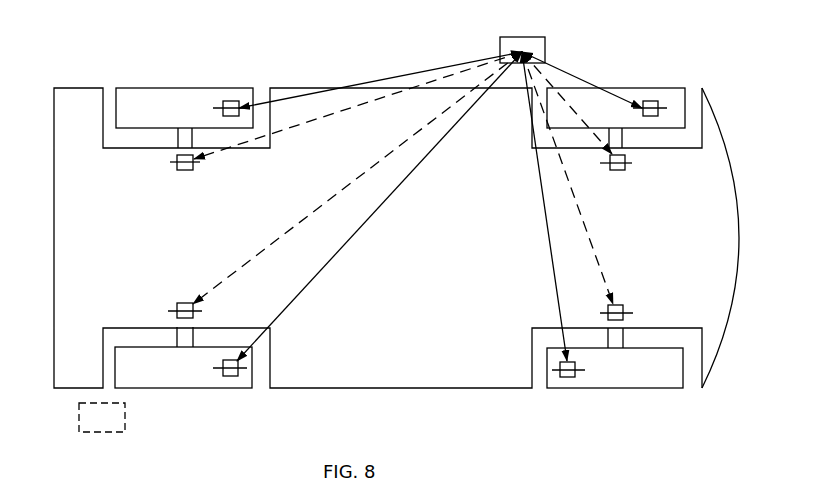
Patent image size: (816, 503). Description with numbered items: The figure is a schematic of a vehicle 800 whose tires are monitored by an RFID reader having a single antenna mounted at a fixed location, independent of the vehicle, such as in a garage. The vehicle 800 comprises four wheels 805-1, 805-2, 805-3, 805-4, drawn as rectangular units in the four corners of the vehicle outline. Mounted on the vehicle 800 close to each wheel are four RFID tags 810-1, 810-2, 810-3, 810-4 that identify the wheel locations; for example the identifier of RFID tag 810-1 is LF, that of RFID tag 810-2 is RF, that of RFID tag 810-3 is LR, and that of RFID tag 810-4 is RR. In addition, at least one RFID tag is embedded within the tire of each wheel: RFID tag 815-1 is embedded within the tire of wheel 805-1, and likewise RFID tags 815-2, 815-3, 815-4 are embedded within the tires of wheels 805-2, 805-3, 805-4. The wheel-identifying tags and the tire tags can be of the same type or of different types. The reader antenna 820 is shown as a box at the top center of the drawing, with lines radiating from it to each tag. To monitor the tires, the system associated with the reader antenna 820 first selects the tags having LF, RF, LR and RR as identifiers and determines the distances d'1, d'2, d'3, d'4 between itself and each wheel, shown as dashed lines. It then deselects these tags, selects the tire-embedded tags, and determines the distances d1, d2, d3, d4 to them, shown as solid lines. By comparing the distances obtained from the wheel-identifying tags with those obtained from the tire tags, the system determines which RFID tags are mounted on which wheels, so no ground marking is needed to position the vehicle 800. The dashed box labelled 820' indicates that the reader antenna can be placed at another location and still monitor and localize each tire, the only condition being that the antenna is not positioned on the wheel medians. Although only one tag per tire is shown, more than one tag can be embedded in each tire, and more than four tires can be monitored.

The vehicle 800 is at (728, 155).
The wheel 805-1 is at (673, 88).
The wheel 805-2 is at (640, 388).
The wheel 805-3 is at (137, 88).
The wheel 805-4 is at (172, 388).
The RFID tag 810-1 is at (613, 172).
The RFID tag 810-2 is at (617, 303).
The RFID tag 810-3 is at (188, 170).
The RFID tag 810-4 is at (178, 303).
The RFID tag 815-1 is at (648, 117).
The RFID tag 815-2 is at (570, 377).
The RFID tag 815-3 is at (228, 101).
The RFID tag 815-4 is at (233, 376).
The reader antenna 820 is at (548, 39).
The reader antenna location 820' is at (70, 417).
The distance d1 is at (598, 86).
The distance d'1 is at (604, 91).
The distance d2 is at (551, 252).
The distance d'2 is at (592, 178).
The distance d3 is at (383, 79).
The distance d'3 is at (358, 105).
The distance d4 is at (343, 245).
The distance d'4 is at (357, 178).